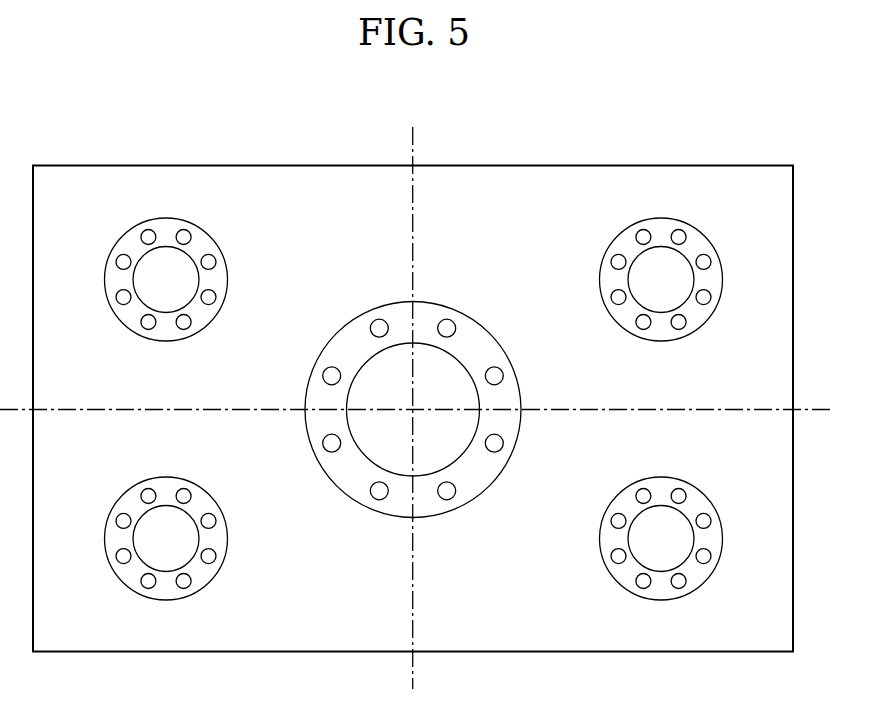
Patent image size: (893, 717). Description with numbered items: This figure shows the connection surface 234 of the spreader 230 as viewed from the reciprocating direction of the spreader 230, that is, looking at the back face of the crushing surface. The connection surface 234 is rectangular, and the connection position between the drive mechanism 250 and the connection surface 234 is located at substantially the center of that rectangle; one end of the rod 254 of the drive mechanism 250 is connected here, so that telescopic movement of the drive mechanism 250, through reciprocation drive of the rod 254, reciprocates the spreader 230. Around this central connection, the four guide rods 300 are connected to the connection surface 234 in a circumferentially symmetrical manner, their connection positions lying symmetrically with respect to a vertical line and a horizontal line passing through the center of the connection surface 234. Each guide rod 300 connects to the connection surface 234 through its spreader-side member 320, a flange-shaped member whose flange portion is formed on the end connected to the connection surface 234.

The spreader 230 is at (513, 165).
The connection surface 234 is at (369, 192).
The drive mechanism 250 is at (413, 465).
The rod 254 is at (470, 503).
The guide rod 300 is at (414, 409).
The spreader-side member 320 is at (227, 561).